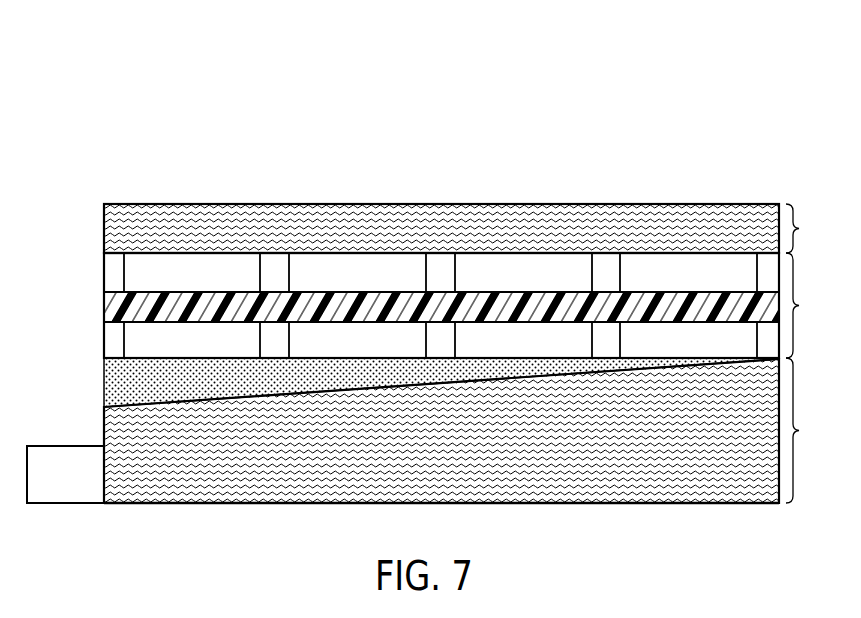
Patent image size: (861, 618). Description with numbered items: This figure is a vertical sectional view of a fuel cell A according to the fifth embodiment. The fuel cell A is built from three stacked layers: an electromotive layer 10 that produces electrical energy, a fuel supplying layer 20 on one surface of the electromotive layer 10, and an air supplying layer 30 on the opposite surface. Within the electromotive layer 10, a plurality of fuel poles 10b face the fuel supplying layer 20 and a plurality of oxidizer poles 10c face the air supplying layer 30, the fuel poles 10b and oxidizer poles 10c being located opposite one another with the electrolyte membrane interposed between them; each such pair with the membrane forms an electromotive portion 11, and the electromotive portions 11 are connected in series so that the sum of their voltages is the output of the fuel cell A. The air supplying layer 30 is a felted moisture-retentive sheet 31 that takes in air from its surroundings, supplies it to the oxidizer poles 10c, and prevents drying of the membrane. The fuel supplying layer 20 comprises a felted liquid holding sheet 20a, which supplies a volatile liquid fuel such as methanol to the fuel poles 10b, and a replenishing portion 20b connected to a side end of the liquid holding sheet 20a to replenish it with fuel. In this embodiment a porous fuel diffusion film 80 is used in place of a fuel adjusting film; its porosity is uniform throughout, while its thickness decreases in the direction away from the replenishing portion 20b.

The air supplying layer 30 is at (462, 228).
The moisture-retentive sheet 31 is at (163, 213).
The electromotive layer 10 is at (463, 305).
The fuel poles 10b is at (248, 332).
The oxidizer poles 10c is at (201, 259).
The electromotive portions 11 is at (269, 268).
The fuel diffusion film 80 is at (108, 385).
The fuel supplying layer 20 is at (464, 430).
The liquid holding sheet 20a is at (194, 493).
The replenishing portion 20b is at (67, 493).
The fuel cell A is at (651, 114).